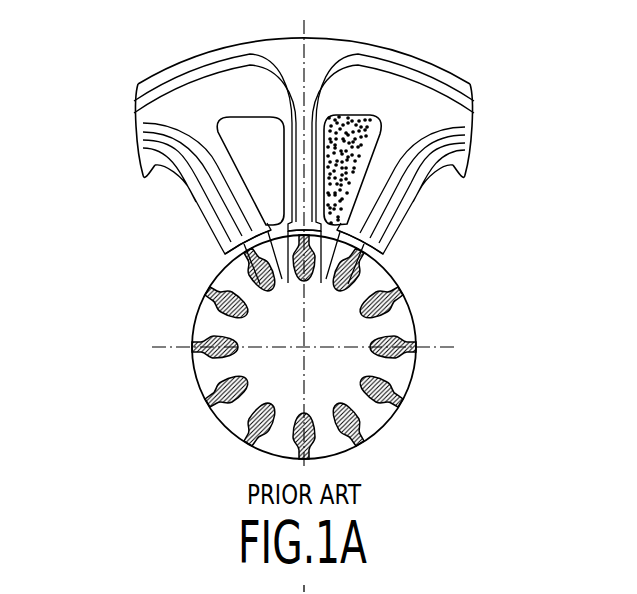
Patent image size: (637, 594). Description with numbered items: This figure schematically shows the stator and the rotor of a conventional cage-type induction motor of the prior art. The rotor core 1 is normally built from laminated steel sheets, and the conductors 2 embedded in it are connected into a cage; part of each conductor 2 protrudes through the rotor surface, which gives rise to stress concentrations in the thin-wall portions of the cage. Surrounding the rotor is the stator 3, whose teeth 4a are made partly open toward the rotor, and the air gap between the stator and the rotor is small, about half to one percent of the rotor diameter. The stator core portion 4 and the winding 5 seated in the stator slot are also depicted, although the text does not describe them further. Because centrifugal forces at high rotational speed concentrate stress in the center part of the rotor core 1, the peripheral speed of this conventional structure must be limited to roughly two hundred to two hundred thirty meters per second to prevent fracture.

The rotor core 1 is at (402, 370).
The conductors 2 is at (390, 295).
The stator 3 is at (128, 65).
The stator core 4 is at (472, 71).
The teeth 4a is at (214, 209).
The stator coil 5 is at (372, 170).